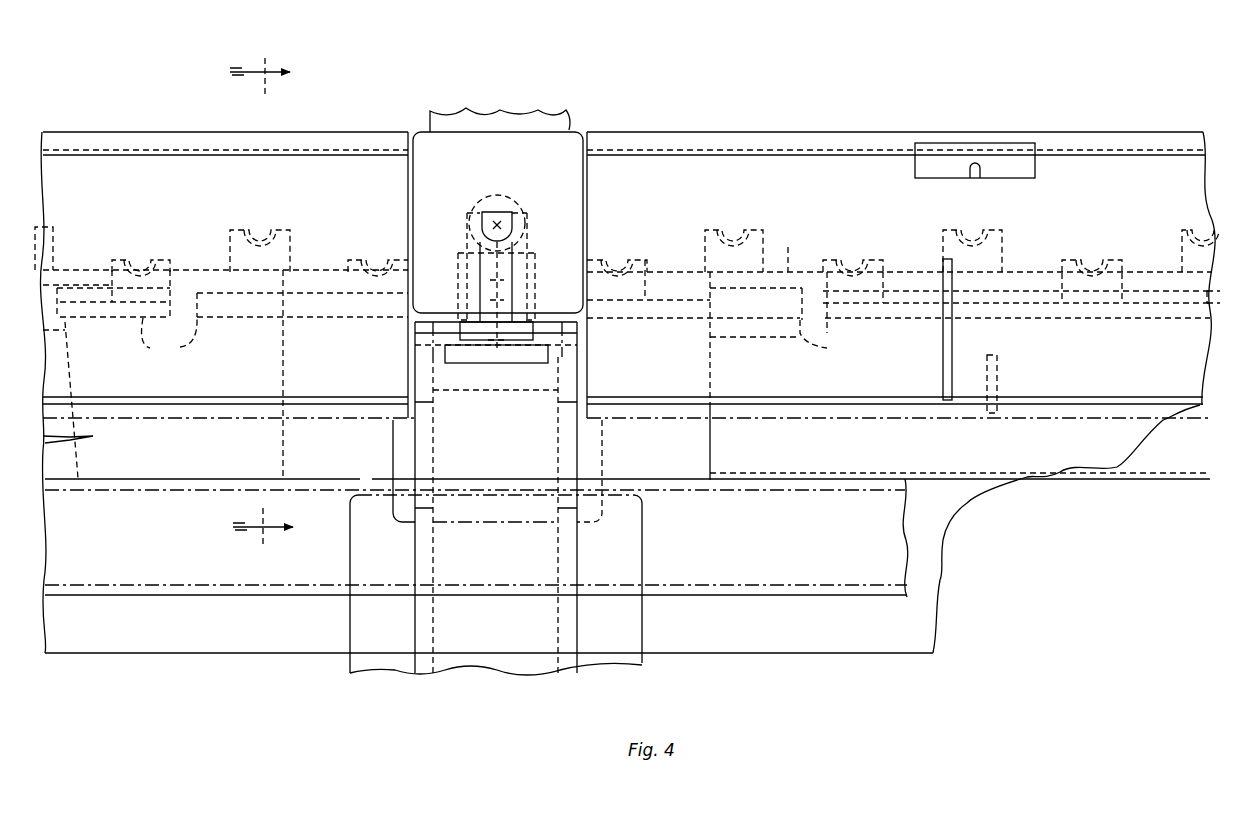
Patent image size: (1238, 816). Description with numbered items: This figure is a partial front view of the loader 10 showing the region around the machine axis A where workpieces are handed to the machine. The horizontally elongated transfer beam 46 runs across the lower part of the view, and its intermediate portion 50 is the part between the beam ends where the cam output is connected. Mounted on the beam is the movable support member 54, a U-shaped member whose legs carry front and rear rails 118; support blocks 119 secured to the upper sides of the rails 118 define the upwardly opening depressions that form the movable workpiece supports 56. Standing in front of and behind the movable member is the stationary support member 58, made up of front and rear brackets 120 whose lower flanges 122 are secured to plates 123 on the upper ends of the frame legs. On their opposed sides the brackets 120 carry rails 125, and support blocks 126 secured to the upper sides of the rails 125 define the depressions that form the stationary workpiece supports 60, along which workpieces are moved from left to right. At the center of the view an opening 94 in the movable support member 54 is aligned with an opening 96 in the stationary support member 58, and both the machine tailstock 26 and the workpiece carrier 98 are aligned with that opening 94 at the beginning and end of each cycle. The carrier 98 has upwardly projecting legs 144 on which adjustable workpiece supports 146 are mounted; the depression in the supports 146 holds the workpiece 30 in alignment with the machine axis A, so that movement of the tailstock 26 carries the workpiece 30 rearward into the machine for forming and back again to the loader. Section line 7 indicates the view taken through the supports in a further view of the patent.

The loader 10 is at (1035, 60).
The stationary support member 58 is at (222, 172).
The brackets 120 is at (268, 170).
The tailstock 26 is at (553, 141).
The workpiece 30 is at (478, 208).
The axis A is at (502, 224).
The legs 144 is at (477, 252).
The adjustable workpiece supports 146 is at (517, 247).
The workpiece carrier 98 is at (550, 260).
The opening 96 is at (584, 365).
The opening 94 is at (712, 388).
The movable support member 54 is at (197, 266).
The support blocks 126 is at (60, 228).
The stationary workpiece supports 60 is at (45, 228).
The rails 125 is at (60, 262).
The movable workpiece supports 56 is at (133, 258).
The support blocks 119 is at (110, 262).
The rails 118 is at (502, 316).
The lower flanges 122 is at (140, 397).
The plates 123 is at (180, 418).
The intermediate portion 50 is at (1068, 480).
The transfer beam 46 is at (1125, 486).
The section line 7 is at (261, 301).